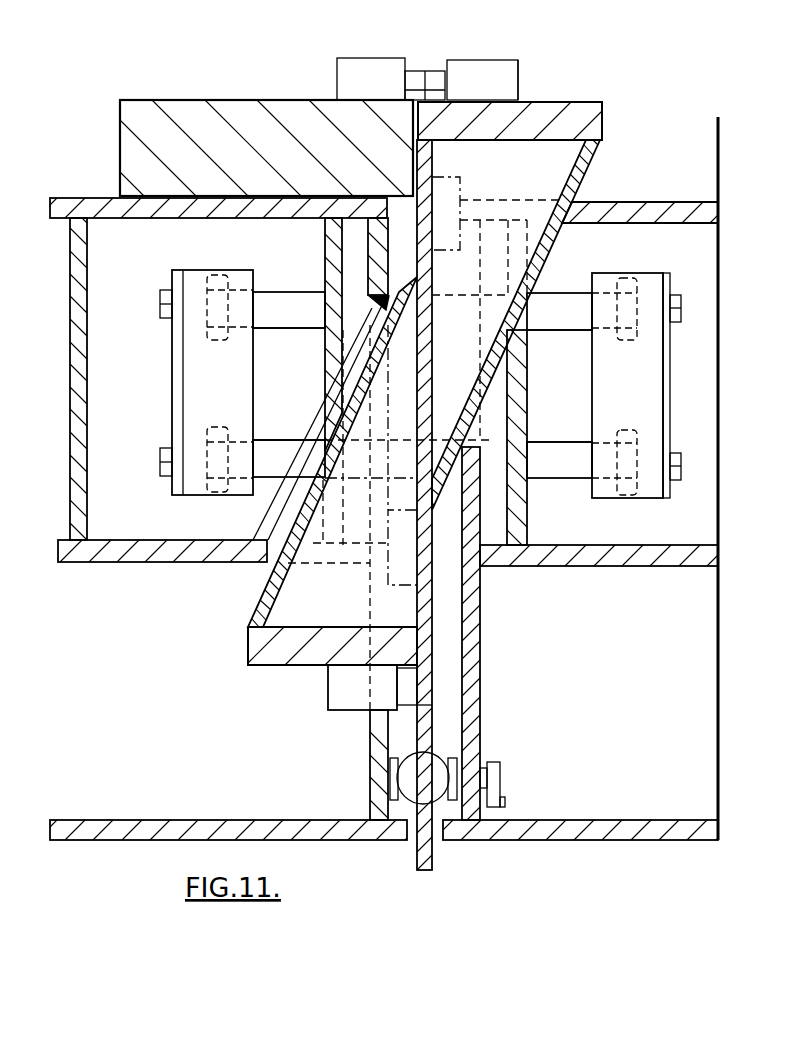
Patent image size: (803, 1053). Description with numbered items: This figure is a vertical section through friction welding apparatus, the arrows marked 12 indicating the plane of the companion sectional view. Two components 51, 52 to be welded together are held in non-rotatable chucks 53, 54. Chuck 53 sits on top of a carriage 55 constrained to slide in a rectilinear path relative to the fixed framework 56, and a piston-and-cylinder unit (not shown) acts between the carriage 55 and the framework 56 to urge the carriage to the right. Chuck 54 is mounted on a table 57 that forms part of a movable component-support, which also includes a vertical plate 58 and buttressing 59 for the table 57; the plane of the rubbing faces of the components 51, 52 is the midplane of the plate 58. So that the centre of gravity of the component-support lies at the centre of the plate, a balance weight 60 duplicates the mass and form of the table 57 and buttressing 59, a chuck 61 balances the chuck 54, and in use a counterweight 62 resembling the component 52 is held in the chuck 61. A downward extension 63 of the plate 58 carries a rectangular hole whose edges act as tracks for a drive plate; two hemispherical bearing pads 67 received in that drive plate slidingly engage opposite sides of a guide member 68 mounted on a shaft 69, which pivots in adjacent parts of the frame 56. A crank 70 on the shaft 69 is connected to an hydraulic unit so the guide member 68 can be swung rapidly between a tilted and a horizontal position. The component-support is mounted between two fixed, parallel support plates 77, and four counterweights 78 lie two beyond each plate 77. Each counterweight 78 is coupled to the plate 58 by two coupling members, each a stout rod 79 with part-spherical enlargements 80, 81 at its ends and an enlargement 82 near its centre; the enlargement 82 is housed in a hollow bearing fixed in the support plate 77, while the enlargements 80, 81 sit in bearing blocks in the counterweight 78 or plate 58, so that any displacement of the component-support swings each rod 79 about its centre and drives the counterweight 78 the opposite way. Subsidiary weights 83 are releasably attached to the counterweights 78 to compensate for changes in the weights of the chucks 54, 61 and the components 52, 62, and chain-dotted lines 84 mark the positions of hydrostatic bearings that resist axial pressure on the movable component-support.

The section line 12 is at (444, 465).
The component 51 is at (428, 70).
The component 52 is at (450, 72).
The non-rotatable chuck 53 is at (362, 72).
The non-rotatable chuck 54 is at (541, 75).
The carriage 55 is at (240, 118).
The fixed framework 56 is at (85, 205).
The table 57 is at (578, 102).
The vertical plate 58 is at (430, 160).
The buttressing 59 is at (578, 168).
The balance weight 60 is at (332, 471).
The chuck 61 is at (332, 690).
The counterweight 62 is at (412, 692).
The downward extension 63 is at (425, 718).
The hemispherical bearing pads 67 is at (410, 782).
The guide member 68 is at (376, 766).
The shaft 69 is at (486, 770).
The crank 70 is at (502, 790).
The fixed support plates 77 is at (327, 243).
The counterweights 78 is at (180, 353).
The stout rod 79 is at (293, 312).
The enlargement 80 is at (214, 274).
The enlargement 81 is at (430, 350).
The enlargement 82 is at (342, 290).
The subsidiary weights 83 is at (174, 400).
The hydrostatic bearings 84 is at (470, 186).